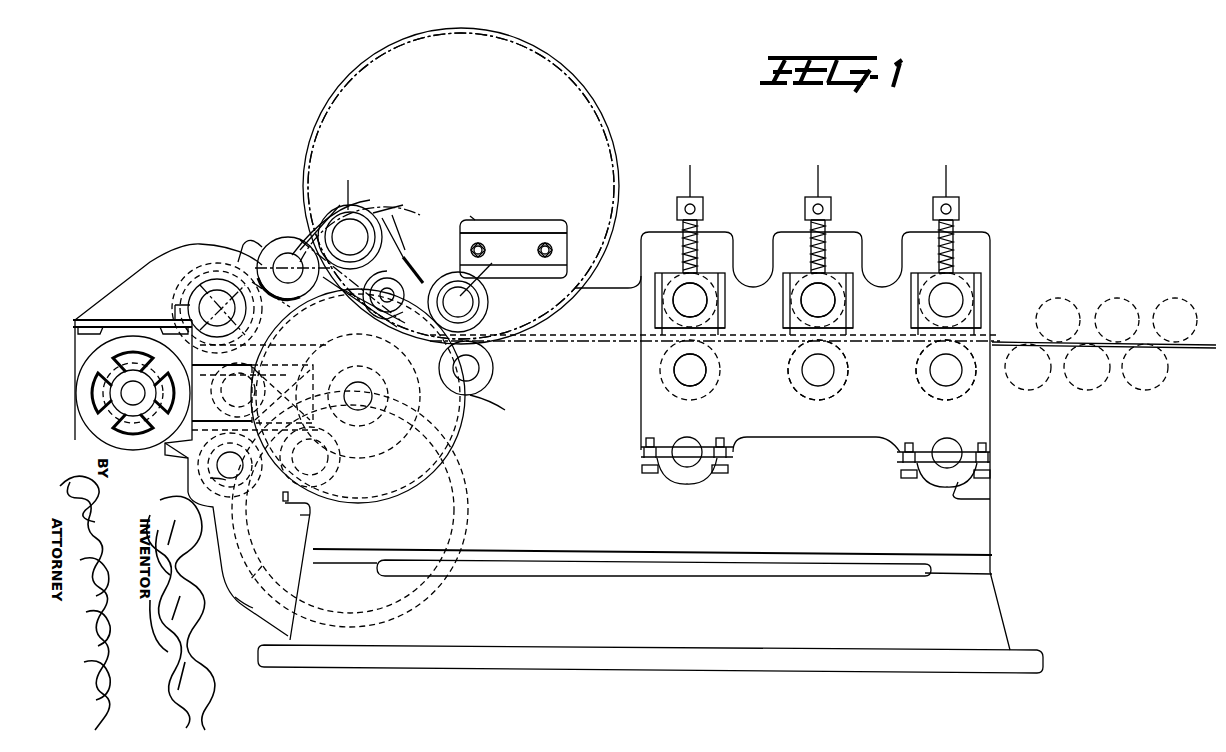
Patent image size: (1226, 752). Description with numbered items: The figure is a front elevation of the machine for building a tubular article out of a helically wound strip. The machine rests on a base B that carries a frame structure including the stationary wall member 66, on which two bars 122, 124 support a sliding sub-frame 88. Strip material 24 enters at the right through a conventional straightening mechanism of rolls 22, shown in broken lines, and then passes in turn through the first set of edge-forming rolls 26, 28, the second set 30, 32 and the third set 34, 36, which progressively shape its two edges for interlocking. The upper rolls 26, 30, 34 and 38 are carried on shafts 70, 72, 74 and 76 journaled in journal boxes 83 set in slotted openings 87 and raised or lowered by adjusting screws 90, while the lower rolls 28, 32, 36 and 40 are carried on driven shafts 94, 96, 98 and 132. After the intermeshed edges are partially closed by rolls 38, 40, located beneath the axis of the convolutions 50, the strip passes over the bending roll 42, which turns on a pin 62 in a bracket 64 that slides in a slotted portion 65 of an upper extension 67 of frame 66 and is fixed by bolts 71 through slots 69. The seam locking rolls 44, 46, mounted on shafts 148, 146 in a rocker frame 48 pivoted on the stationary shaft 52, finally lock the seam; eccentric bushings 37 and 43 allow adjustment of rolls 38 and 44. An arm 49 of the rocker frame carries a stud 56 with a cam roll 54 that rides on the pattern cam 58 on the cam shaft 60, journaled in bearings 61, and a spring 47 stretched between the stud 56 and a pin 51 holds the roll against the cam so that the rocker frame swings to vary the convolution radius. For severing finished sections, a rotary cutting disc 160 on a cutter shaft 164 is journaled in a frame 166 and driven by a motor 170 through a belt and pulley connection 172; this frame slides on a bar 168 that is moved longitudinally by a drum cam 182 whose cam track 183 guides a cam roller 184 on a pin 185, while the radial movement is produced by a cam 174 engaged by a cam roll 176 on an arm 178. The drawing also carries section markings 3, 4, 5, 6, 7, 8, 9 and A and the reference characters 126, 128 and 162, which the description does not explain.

The base B is at (692, 640).
The section arrow 3 is at (67, 358).
The section arrow 4 is at (308, 156).
The section line 5 is at (934, 182).
The section line 6 is at (806, 182).
The section line 7 is at (678, 182).
The section arrow 8 is at (465, 258).
The section arrow 9 is at (250, 284).
The section arrow A is at (383, 368).
The straightening rolls 22 is at (1160, 300).
The material strip 24 is at (1195, 352).
The upper edge-forming roll 26 is at (985, 287).
The lower edge-forming roll 28 is at (980, 405).
The upper edge-forming roll 30 is at (838, 290).
The lower edge-forming roll 32 is at (848, 364).
The upper edge-forming roll 34 is at (702, 312).
The lower edge-forming roll 36 is at (698, 405).
The eccentric bushing 37 is at (474, 306).
The upper forming roll 38 is at (485, 298).
The lower forming roll 40 is at (499, 407).
The bending roll 42 is at (405, 262).
The eccentric bushing 43 is at (395, 205).
The seam locking roll 44 is at (358, 220).
The seam locking roll 46 is at (282, 225).
The spring 47 is at (336, 464).
The rocker frame 48 is at (408, 222).
The arm 49 is at (236, 422).
The convolutions 50 is at (548, 63).
The pin 51 is at (345, 425).
The stationary shaft 52 is at (330, 362).
The cam roll 54 is at (261, 384).
The stud 56 is at (232, 400).
The pattern cam 58 is at (250, 522).
The cam shaft 60 is at (283, 494).
The bearings 61 is at (302, 516).
The pin 62 is at (370, 292).
The bracket 64 is at (535, 232).
The slotted portion 65 is at (495, 232).
The frame wall member 66 is at (600, 290).
The upper extension 67 is at (472, 222).
The slots 69 is at (540, 246).
The shaft 70 is at (835, 303).
The fastening bolts 71 is at (472, 246).
The shaft 72 is at (830, 312).
The shaft 74 is at (676, 300).
The shaft 76 is at (488, 272).
The journal boxes 83 is at (720, 324).
The slotted openings 87 is at (672, 275).
The sub-frame 88 is at (770, 445).
The adjusting screws 90 is at (698, 225).
The shaft 94 is at (933, 380).
The shaft 96 is at (806, 378).
The shaft 98 is at (676, 372).
The bar 122 is at (963, 452).
The bar 124 is at (690, 485).
The bolt 126 is at (660, 470).
The bolt 128 is at (992, 471).
The shaft 132 is at (472, 366).
The lock seam roller shaft 146 is at (262, 264).
The shaft 148 is at (340, 210).
The rotary cutting disc 160 is at (455, 448).
The drum surface 162 is at (614, 157).
The cutter shaft 164 is at (366, 396).
The cutter frame 166 is at (158, 255).
The sliding bar 168 is at (188, 300).
The motor 170 is at (76, 400).
The belt and pulley connection 172 is at (170, 452).
The cam 174 is at (269, 575).
The cam roll 176 is at (216, 490).
The arm 178 is at (215, 467).
The drum cam 182 is at (245, 607).
The cam track 183 is at (446, 527).
The cam roller 184 is at (133, 386).
The pin 185 is at (205, 285).